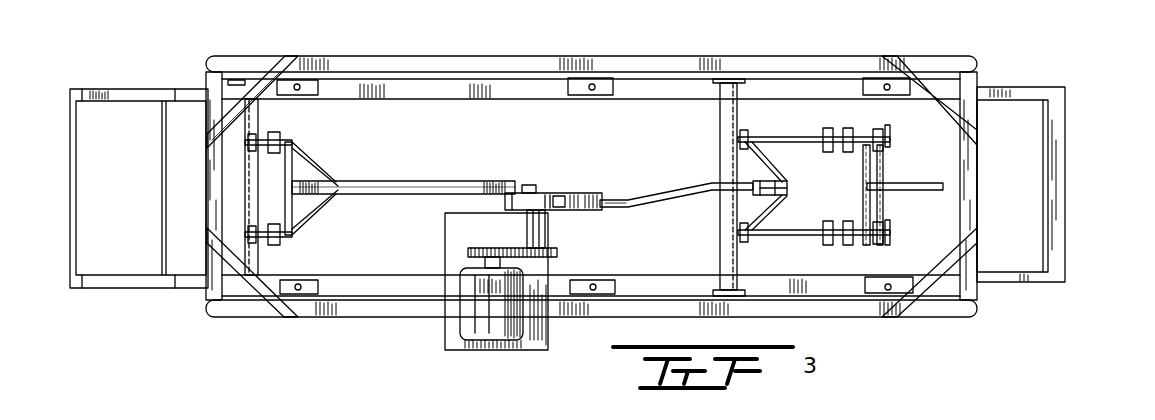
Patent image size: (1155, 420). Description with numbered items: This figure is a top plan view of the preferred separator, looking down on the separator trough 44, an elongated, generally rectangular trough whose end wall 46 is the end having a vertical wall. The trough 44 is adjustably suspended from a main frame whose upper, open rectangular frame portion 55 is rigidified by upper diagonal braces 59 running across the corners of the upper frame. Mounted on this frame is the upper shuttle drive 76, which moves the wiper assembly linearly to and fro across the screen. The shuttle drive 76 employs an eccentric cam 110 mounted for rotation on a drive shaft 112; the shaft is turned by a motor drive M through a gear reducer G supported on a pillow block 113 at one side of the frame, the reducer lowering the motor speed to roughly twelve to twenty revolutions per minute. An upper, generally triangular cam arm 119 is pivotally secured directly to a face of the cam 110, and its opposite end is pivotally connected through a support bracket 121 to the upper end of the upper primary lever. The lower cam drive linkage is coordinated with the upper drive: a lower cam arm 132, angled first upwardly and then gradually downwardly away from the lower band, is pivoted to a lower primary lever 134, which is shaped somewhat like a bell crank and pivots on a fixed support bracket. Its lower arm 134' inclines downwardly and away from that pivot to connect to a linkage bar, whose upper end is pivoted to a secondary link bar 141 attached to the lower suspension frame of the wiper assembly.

The upper diagonal brace 59 is at (260, 78).
The end wall 46 is at (68, 290).
The separator trough 44 is at (1065, 212).
The upper open rectangular frame portion 55 is at (978, 285).
The support bracket 121 is at (293, 205).
The upper shuttle drive 76 is at (457, 178).
The upper cam arm 119 is at (372, 181).
The eccentric cam 110 is at (575, 197).
The drive shaft 112 is at (547, 225).
The lower cam arm 132 is at (652, 205).
The lower arm 134' is at (814, 144).
The lower primary lever 134 is at (814, 233).
The secondary link bar 141 is at (905, 190).
The pillow block 113 is at (453, 342).
The gear reducer G is at (557, 250).
The motor drive M is at (513, 343).